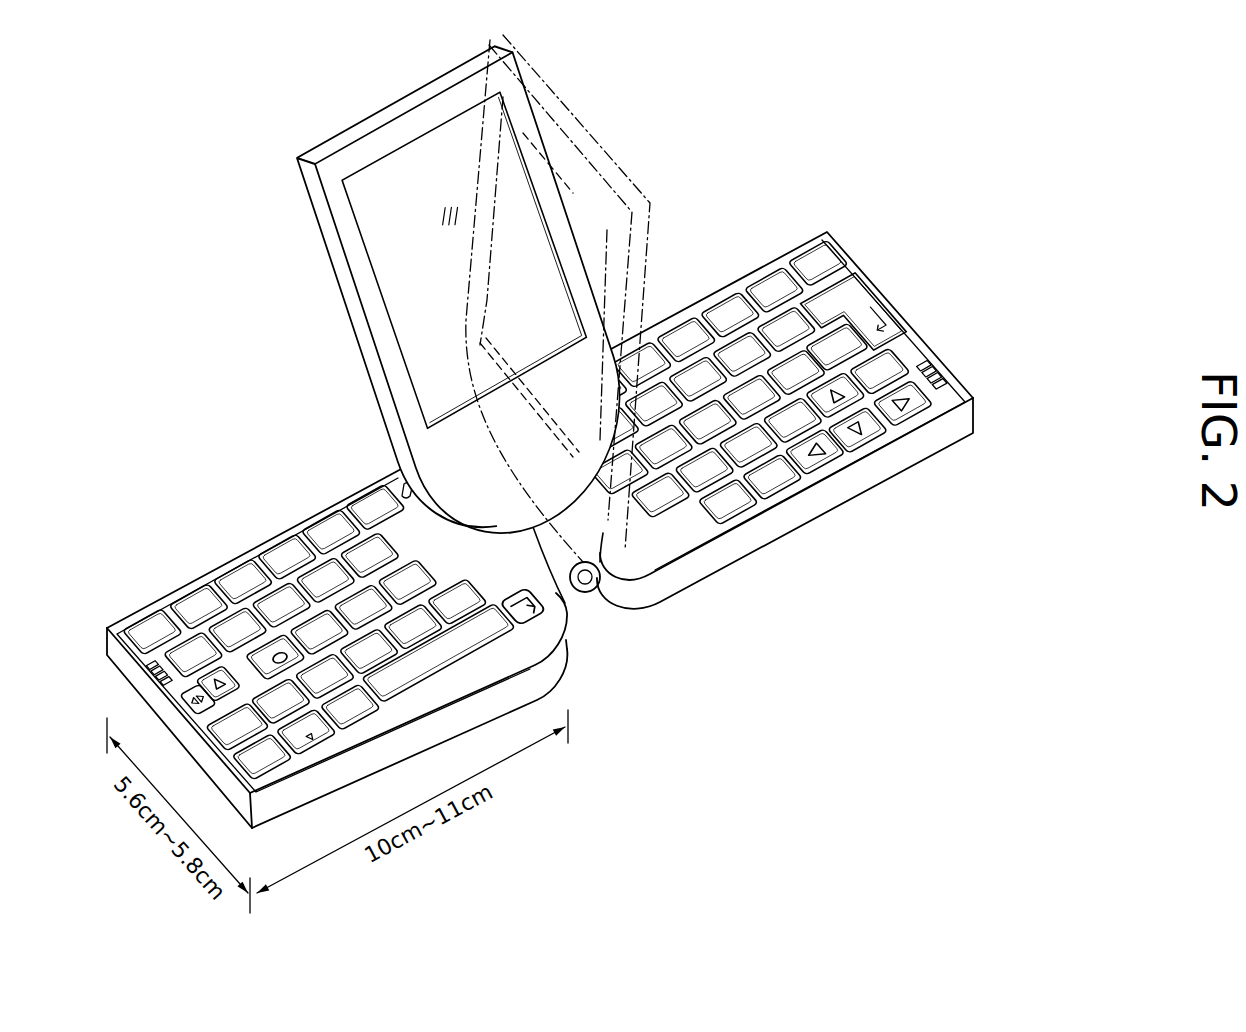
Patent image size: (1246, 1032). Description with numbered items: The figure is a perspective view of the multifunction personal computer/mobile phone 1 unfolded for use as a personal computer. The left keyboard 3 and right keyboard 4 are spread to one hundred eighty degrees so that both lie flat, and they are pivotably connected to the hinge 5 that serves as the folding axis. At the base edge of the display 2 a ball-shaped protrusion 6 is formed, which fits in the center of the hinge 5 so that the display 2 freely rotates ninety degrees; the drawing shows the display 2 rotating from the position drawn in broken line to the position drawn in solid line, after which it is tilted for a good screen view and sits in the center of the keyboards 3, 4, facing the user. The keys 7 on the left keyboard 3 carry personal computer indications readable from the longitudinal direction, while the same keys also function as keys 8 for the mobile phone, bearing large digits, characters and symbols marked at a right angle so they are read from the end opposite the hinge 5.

The multifunction personal computer/mobile phone 1 is at (540, 520).
The display 2 is at (395, 133).
The left keyboard 3 is at (437, 718).
The right keyboard 4 is at (885, 474).
The hinge 5 is at (597, 592).
The ball-shaped protrusion 6 is at (569, 610).
The keys 7 is at (318, 525).
The keys 8 is at (283, 585).